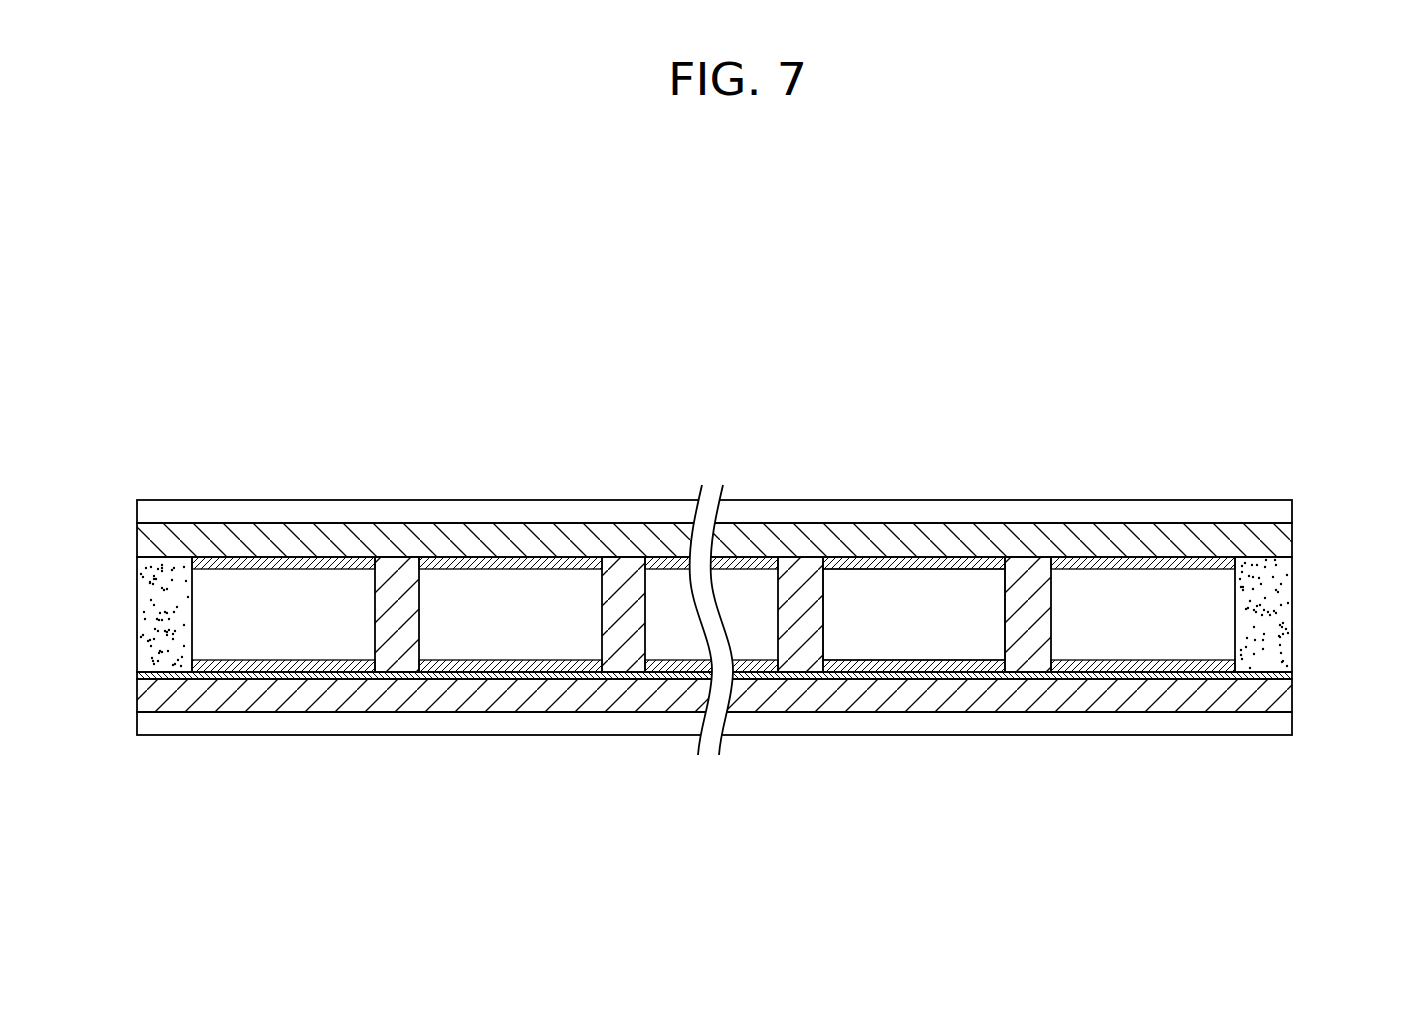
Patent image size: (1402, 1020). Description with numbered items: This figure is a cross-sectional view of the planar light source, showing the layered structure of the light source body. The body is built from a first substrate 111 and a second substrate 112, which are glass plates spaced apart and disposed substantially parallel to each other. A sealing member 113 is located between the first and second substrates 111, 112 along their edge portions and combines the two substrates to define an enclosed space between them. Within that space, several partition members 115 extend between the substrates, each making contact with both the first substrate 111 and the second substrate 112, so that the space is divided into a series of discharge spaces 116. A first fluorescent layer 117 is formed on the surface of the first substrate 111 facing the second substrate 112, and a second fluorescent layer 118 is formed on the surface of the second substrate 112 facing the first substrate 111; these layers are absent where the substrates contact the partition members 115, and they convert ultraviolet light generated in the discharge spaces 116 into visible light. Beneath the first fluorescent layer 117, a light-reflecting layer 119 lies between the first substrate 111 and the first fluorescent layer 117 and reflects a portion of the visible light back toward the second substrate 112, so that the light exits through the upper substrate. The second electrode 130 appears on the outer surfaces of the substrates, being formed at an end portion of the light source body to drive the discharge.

The first substrate 111 is at (1277, 700).
The second substrate 112 is at (1278, 543).
The sealing member 113 is at (1280, 614).
The partition member 115 is at (1032, 568).
The discharge space 116 is at (917, 587).
The first fluorescent layer 117 is at (342, 668).
The second fluorescent layer 118 is at (340, 562).
The light-reflecting layer 119 is at (143, 675).
The second electrode 130 is at (143, 512).